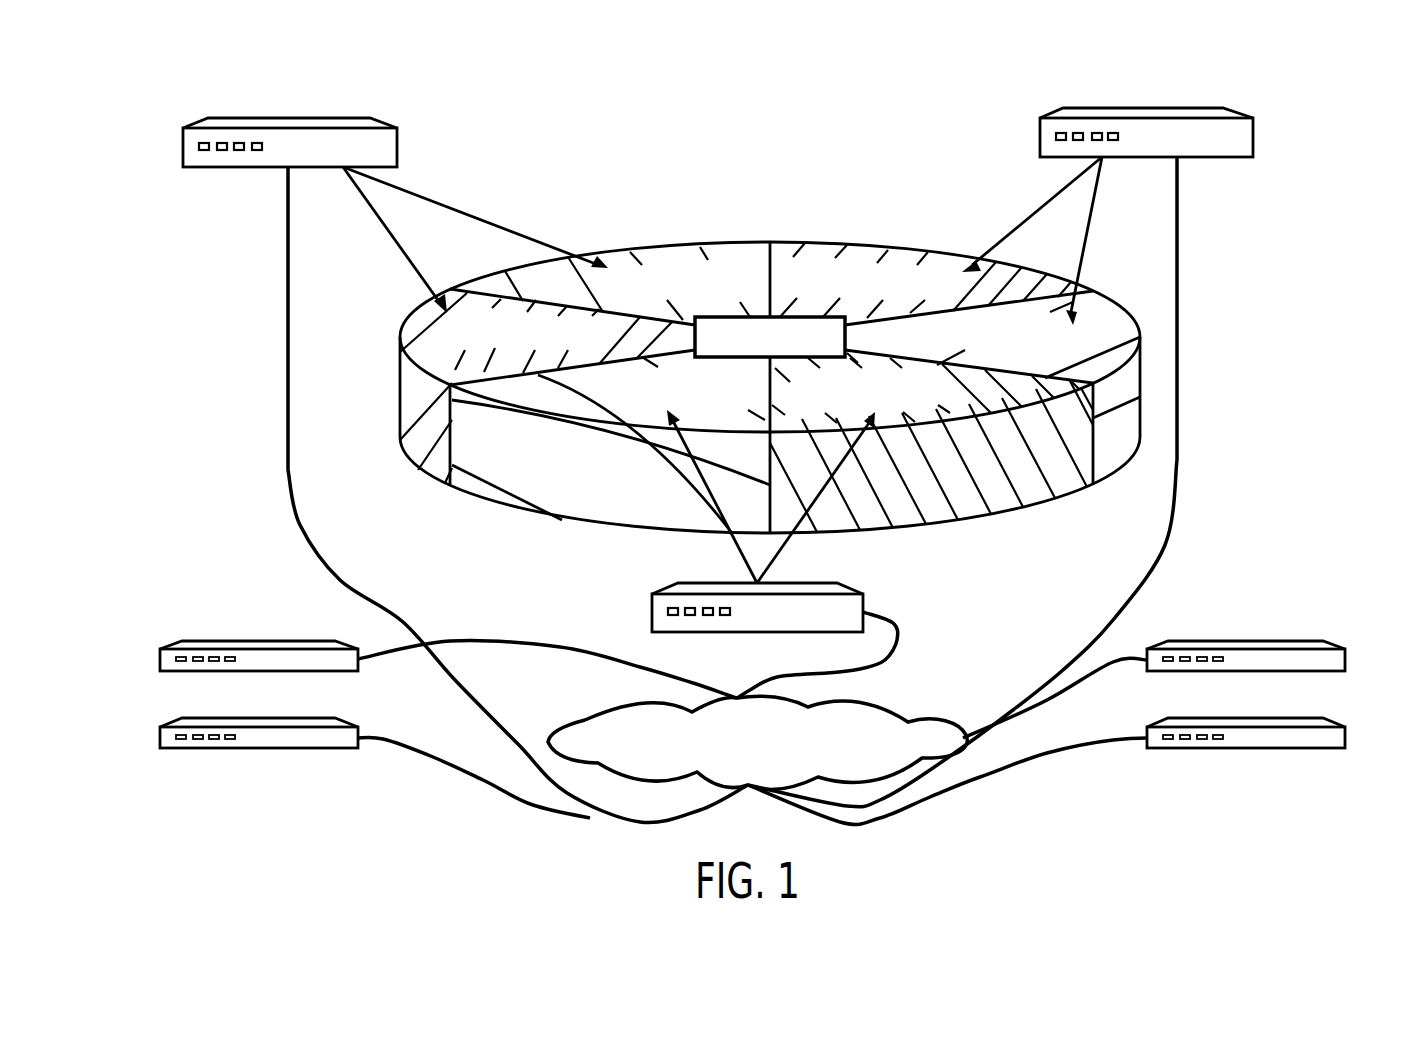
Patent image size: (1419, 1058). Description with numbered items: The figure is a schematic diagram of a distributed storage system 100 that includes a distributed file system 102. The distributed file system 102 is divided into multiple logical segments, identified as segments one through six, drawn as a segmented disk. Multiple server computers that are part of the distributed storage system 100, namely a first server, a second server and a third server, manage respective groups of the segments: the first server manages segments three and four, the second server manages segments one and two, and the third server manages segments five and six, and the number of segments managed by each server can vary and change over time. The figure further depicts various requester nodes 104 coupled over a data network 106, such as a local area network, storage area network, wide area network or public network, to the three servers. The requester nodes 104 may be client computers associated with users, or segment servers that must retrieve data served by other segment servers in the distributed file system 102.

The distributed storage system 100 is at (632, 160).
The distributed file system 102 is at (770, 316).
The requester nodes 104 is at (182, 672).
The data network 106 is at (897, 702).